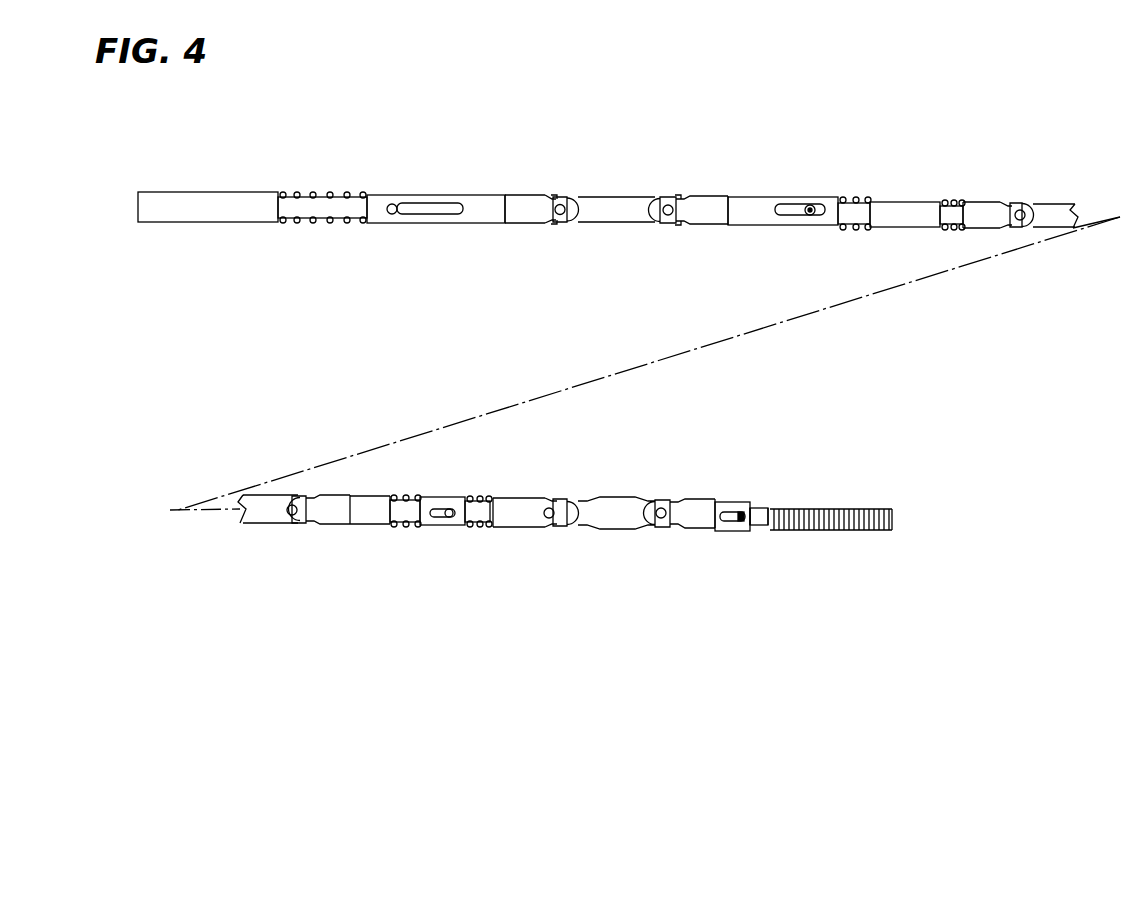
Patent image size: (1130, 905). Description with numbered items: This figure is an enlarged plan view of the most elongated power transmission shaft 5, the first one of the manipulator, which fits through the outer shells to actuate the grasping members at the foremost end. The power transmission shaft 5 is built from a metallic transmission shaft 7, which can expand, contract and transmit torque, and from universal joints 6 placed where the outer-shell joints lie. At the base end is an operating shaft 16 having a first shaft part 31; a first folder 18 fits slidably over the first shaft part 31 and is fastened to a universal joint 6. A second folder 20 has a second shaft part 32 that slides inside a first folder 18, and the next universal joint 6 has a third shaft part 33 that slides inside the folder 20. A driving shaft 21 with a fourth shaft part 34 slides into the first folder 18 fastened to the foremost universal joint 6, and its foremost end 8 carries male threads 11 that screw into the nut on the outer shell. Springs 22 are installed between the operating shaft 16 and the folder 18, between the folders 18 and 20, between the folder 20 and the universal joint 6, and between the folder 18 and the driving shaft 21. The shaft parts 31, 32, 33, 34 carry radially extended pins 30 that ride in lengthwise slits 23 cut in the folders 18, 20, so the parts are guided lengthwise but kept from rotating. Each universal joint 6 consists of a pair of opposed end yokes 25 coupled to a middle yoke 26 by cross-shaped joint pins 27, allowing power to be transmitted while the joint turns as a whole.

The power transmission shaft 5 is at (713, 188).
The universal joint 6 is at (659, 387).
The transmission shaft 7 is at (379, 192).
The foremost end 8 is at (764, 526).
The male threads 11 is at (846, 509).
The operating shaft 16 is at (215, 198).
The first folder 18 is at (758, 200).
The second folder 20 is at (910, 228).
The driving shaft 21 is at (767, 508).
The springs 22 is at (313, 193).
The slits 23 is at (449, 203).
The end yokes 25 is at (535, 224).
The middle yoke 26 is at (611, 197).
The joint pins 27 is at (560, 197).
The pins 30 is at (391, 222).
The first shaft part 31 is at (302, 220).
The second shaft part 32 is at (850, 226).
The third shaft part 33 is at (955, 227).
The fourth shaft part 34 is at (757, 508).